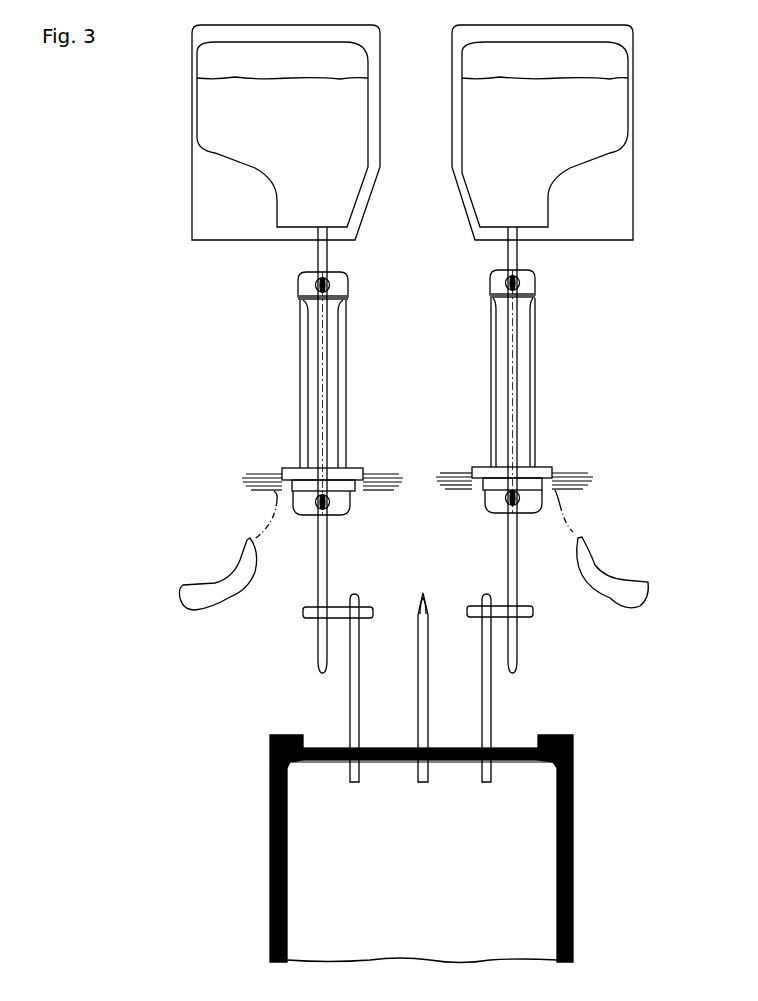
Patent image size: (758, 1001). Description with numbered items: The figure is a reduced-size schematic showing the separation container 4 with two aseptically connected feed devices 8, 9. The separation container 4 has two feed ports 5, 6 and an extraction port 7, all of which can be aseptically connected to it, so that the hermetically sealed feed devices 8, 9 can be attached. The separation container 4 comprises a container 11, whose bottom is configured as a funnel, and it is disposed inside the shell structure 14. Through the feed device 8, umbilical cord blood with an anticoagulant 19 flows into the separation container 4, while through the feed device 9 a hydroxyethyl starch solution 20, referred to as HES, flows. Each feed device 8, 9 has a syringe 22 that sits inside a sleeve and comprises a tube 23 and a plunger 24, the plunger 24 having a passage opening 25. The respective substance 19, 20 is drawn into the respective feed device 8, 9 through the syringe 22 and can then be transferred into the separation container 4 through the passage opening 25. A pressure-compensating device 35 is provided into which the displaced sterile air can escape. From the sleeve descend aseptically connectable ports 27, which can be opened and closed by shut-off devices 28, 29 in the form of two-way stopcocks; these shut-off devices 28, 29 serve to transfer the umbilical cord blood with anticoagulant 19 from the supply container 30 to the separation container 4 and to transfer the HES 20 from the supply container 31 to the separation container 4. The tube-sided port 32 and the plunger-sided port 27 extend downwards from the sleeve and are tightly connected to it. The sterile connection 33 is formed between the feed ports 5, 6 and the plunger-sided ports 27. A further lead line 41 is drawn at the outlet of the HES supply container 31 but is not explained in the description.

The separation container 4 is at (600, 797).
The feed port 5 is at (353, 697).
The feed port 6 is at (485, 700).
The extraction port 7 is at (422, 590).
The feed device 8 is at (180, 190).
The feed device 9 is at (620, 385).
The container 11 is at (446, 879).
The shell structure 14 is at (573, 860).
The umbilical cord blood with anticoagulant 19 is at (316, 145).
The hydroxyethyl starch solution 20 is at (535, 145).
The syringe 22 is at (408, 382).
The tube 23 is at (302, 310).
The plunger 24 is at (540, 483).
The passage opening 25 is at (323, 378).
The port 27 is at (325, 588).
The shut-off device 28 is at (280, 502).
The shut-off device 29 is at (505, 283).
The supply container 30 is at (197, 79).
The supply container 31 is at (618, 35).
The tube-sided port 32 is at (328, 253).
The sterile connection 33 is at (533, 613).
The pressure-compensating device 35 is at (637, 593).
The outlet tube of second reservoir 41 is at (514, 232).